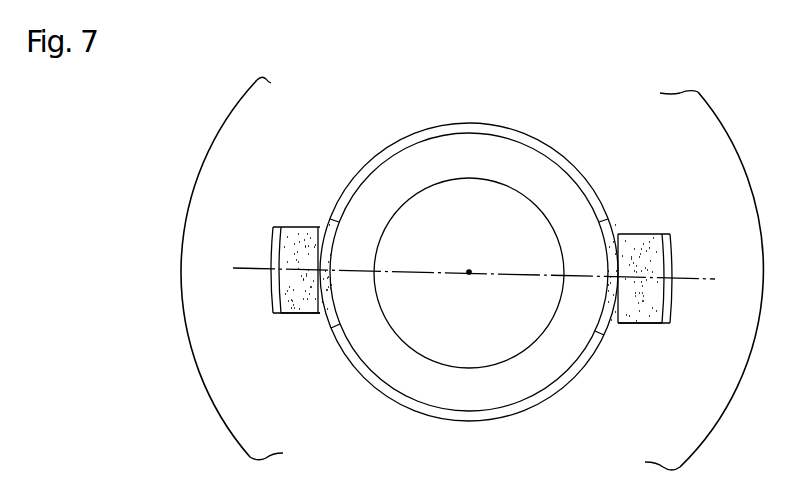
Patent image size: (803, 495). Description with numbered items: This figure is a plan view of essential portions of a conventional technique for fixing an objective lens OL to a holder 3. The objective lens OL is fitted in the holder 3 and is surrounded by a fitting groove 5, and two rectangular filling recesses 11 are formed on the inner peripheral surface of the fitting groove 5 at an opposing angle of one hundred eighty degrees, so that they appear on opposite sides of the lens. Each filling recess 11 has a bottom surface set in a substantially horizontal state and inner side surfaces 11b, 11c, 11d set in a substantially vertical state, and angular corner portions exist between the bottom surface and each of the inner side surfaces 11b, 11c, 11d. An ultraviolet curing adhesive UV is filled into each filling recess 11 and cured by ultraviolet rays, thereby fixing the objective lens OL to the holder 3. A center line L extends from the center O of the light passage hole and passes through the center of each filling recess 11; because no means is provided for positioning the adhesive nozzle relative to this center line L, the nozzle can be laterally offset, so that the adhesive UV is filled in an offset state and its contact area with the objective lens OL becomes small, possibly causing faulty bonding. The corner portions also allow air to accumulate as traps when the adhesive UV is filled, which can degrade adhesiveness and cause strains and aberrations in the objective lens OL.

The holder 3 is at (258, 110).
The fitting groove 5 is at (553, 150).
The filling recess 11 is at (279, 225).
The inner side surface 11b is at (303, 228).
The inner side surface 11c is at (274, 289).
The inner side surface 11d is at (295, 316).
The center O is at (469, 274).
The objective lens OL is at (479, 195).
The center line L is at (257, 267).
The ultraviolet curing adhesive UV is at (323, 330).